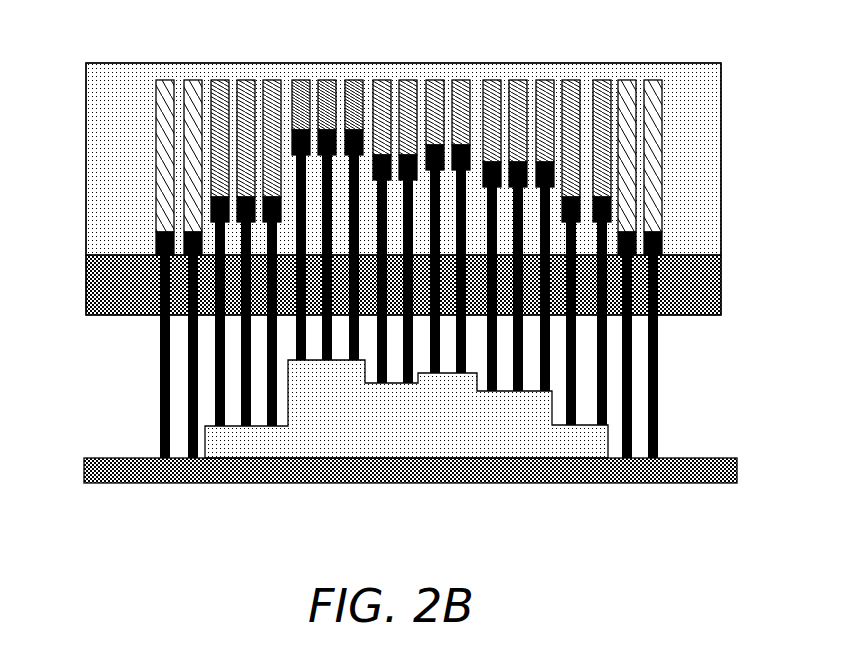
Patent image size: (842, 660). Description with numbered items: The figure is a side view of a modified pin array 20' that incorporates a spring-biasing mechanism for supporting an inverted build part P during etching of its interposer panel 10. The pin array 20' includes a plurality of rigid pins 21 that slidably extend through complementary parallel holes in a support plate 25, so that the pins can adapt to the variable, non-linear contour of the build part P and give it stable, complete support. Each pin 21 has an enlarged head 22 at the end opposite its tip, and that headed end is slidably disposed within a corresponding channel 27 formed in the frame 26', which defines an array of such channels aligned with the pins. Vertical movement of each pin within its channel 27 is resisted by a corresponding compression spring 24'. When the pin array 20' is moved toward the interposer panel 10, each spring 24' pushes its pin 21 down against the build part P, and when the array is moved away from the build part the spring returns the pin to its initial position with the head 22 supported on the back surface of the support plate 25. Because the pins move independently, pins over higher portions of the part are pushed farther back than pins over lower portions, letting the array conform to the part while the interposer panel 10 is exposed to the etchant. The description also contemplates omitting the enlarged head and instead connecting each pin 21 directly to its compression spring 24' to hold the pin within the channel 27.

The modified pin array 20' is at (444, 189).
The frame 26' is at (377, 159).
The support plate 25 is at (86, 285).
The compression spring 24' is at (409, 128).
The channel 27 is at (552, 100).
The enlarged head 22 is at (212, 210).
The rigid pin 21 is at (160, 362).
The build part P is at (255, 445).
The interposer panel 10 is at (690, 458).